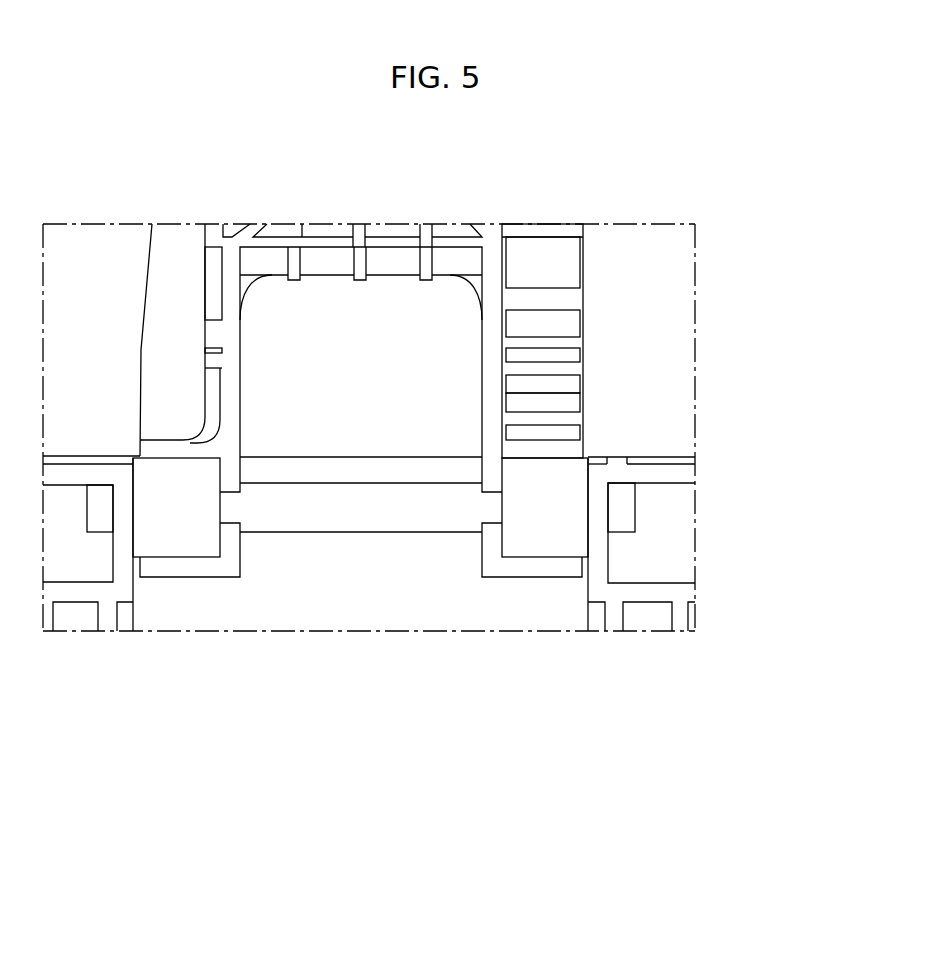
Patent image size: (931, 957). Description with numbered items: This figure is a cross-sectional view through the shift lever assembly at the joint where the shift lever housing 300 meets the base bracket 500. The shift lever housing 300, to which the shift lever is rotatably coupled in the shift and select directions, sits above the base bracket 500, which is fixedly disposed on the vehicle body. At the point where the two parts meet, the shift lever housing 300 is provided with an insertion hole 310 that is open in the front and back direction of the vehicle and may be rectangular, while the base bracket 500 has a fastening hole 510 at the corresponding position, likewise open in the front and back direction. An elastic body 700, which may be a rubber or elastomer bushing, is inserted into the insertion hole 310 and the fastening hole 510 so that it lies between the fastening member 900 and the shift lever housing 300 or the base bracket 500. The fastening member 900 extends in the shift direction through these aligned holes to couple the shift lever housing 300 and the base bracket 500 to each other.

The shift lever housing 300 is at (539, 265).
The insertion hole 310 is at (543, 460).
The base bracket 500 is at (650, 617).
The fastening hole 510 is at (608, 521).
The elastic body 700 is at (185, 518).
The fastening member 900 is at (375, 505).